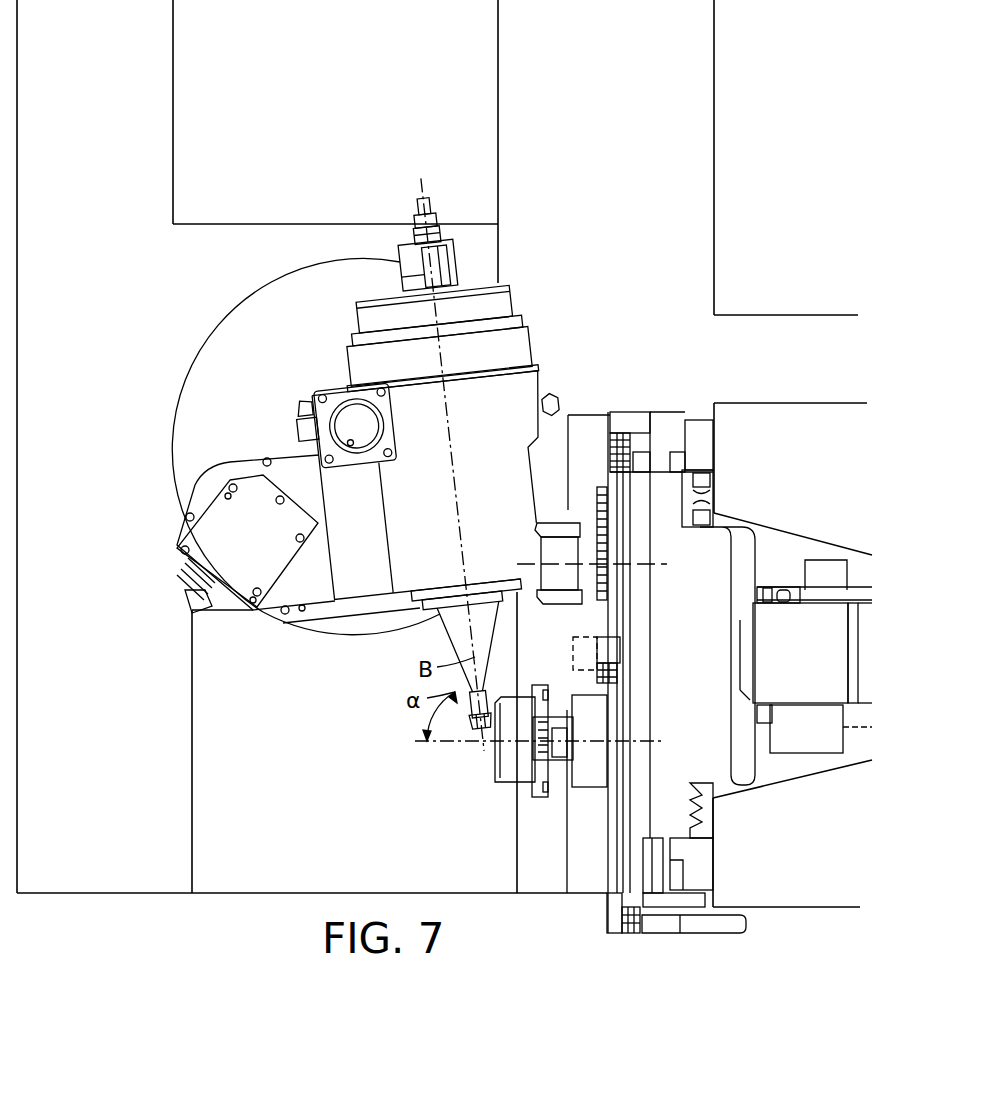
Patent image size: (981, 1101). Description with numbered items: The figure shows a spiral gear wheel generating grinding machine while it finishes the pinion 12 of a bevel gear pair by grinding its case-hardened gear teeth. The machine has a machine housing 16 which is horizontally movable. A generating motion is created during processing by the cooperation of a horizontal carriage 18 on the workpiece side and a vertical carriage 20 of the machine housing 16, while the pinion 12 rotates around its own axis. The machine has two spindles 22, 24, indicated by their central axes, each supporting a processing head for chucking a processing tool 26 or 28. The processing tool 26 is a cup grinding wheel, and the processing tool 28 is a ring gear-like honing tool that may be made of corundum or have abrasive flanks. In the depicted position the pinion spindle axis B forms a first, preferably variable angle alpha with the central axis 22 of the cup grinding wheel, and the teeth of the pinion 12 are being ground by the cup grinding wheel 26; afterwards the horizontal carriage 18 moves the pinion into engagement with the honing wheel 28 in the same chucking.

The pinion 12 is at (478, 730).
The machine housing 16 is at (860, 880).
The horizontal carriage 18 is at (197, 262).
The vertical carriage 20 is at (676, 820).
The spindle 22 is at (642, 742).
The spindle 24 is at (643, 567).
The cup grinding wheel 26 is at (512, 786).
The honing tool 28 is at (552, 605).